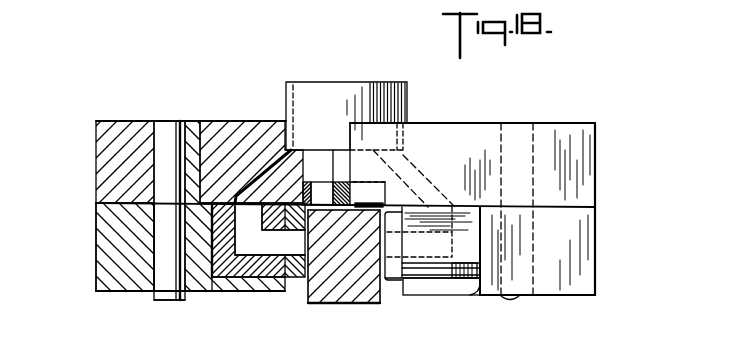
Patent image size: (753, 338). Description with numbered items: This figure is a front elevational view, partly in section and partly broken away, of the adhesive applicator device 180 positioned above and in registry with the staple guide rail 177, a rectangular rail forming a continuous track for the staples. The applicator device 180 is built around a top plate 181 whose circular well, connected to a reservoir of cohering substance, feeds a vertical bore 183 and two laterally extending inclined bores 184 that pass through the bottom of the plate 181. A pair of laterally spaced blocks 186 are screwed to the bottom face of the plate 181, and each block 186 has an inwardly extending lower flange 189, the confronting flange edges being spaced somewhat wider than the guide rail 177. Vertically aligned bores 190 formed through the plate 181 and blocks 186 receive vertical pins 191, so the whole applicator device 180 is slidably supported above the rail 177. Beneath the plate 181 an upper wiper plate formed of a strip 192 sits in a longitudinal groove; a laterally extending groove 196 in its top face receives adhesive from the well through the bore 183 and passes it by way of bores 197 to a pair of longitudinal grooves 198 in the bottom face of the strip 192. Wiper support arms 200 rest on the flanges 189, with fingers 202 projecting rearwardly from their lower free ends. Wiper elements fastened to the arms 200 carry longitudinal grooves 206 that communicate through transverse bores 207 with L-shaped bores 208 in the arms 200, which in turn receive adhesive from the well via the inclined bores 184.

The staple guide rail 177 is at (345, 303).
The applicator device 180 is at (522, 115).
The top plate 181 is at (96, 167).
The vertical bore 183 is at (323, 194).
The inclined bores 184 is at (266, 176).
The blocks 186 is at (96, 238).
The lower flange 189 is at (240, 283).
The vertically aligned bores 190 is at (168, 120).
The vertical pins 191 is at (170, 299).
The strip 192 is at (366, 192).
The laterally extending groove 196 is at (308, 183).
The bores 197 is at (351, 168).
The longitudinal grooves 198 is at (392, 200).
The wiper support arms 200 is at (212, 284).
The fingers 202 is at (477, 290).
The longitudinal grooves 206 is at (385, 248).
The transverse bores 207 is at (292, 240).
The L-shaped bores 208 is at (278, 250).